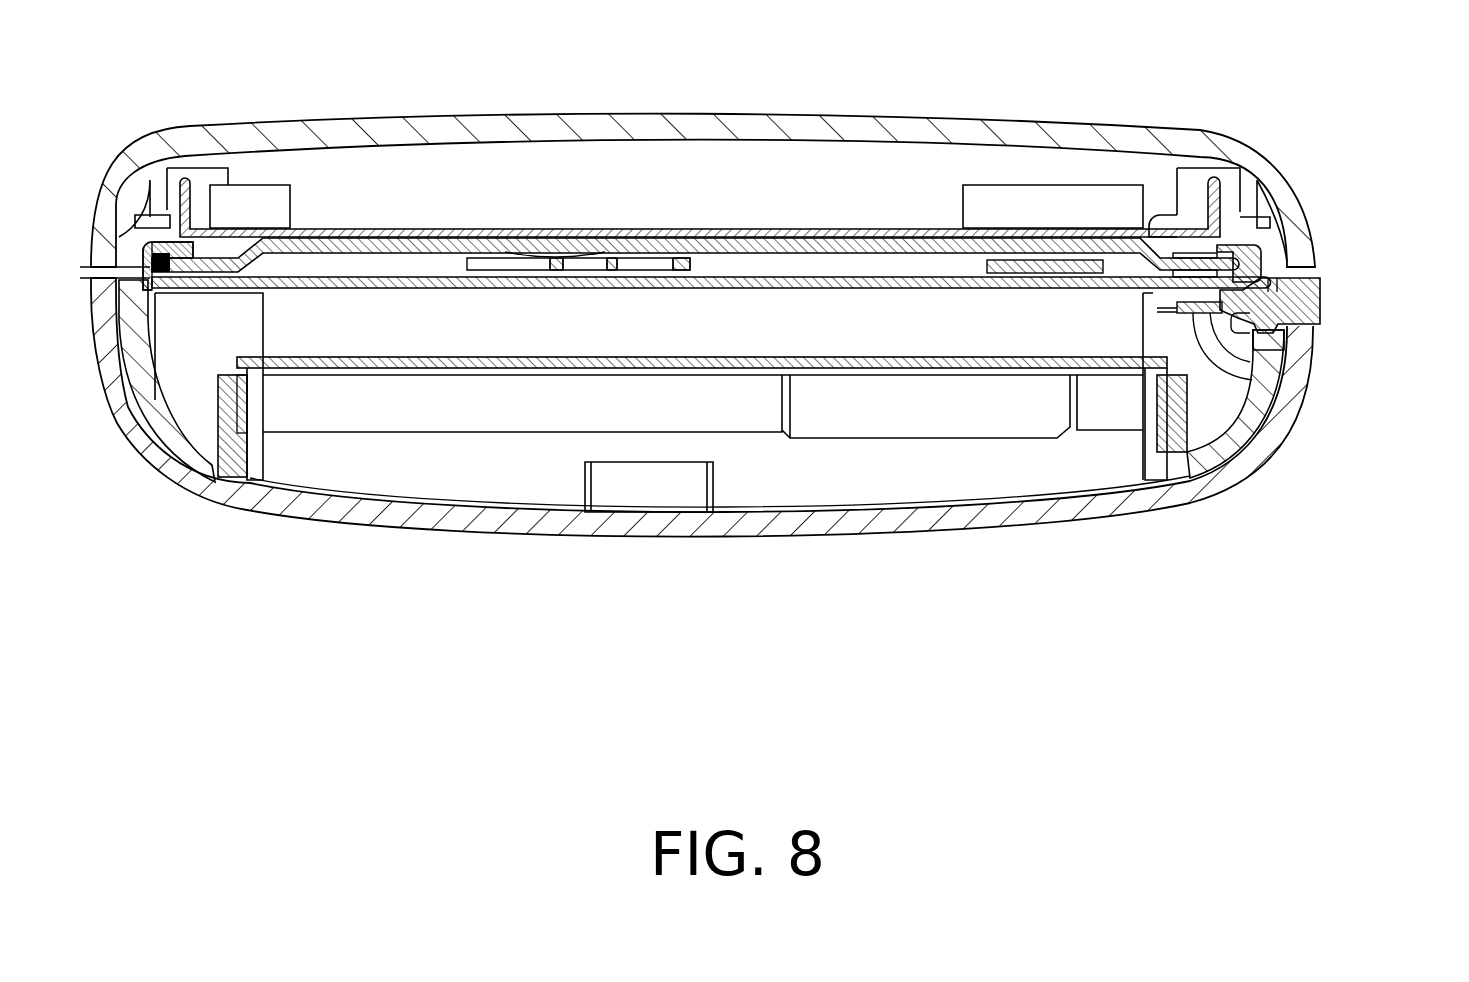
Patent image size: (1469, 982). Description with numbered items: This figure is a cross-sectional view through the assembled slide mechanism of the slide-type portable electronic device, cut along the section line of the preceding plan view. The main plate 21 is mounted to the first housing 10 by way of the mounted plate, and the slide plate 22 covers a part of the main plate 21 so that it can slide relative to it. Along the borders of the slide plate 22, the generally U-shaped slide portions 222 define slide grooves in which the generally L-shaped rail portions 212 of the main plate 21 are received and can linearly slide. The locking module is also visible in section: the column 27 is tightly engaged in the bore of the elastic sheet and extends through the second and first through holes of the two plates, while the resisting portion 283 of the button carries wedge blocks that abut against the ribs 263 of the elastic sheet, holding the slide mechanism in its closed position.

The first housing 10 is at (407, 137).
The main plate 21 is at (680, 245).
The slide plate 22 is at (738, 283).
The slide portion 222 is at (1245, 247).
The rail portion 212 is at (1265, 265).
The resisting portion 283 is at (1243, 302).
The rib 263 is at (1258, 353).
The column 27 is at (1270, 390).